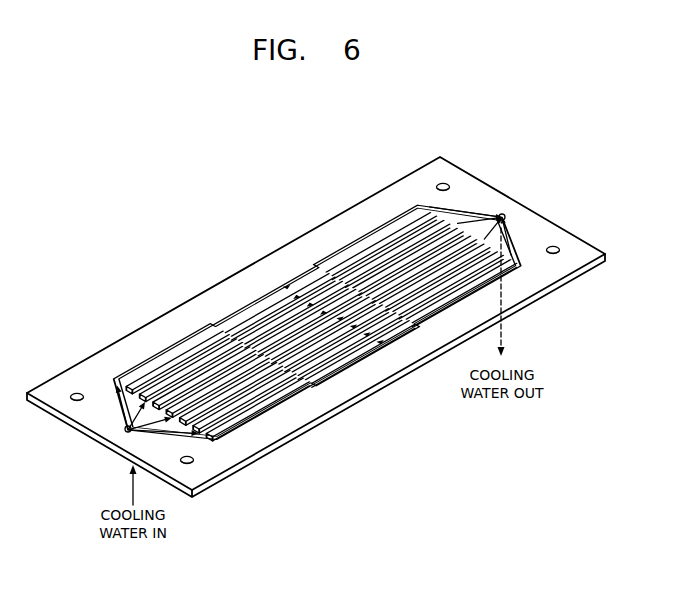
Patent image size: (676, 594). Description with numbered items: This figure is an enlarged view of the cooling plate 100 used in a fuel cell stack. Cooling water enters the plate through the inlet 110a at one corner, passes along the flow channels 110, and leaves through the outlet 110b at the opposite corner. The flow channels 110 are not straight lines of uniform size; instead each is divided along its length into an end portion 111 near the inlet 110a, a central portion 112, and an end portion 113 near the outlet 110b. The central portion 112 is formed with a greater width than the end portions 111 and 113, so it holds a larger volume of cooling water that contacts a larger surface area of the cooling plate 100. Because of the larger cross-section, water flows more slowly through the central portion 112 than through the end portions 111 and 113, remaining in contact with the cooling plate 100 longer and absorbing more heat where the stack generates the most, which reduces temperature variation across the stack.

The cooling plate 100 is at (300, 436).
The flow channel 110 is at (295, 310).
The inlet 110a is at (124, 432).
The outlet 110b is at (501, 214).
The end portion 111 is at (218, 386).
The central portion 112 is at (315, 327).
The end portion 113 is at (421, 270).